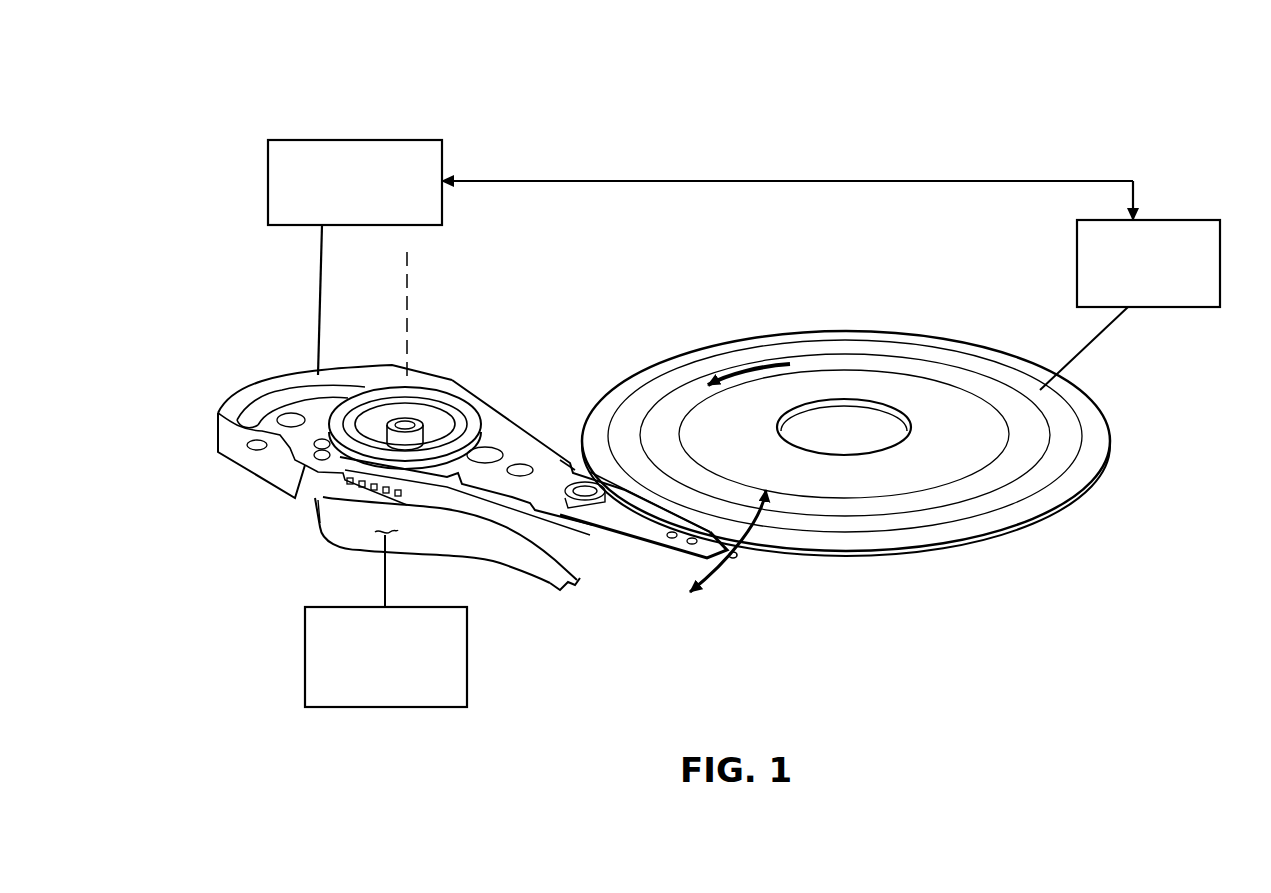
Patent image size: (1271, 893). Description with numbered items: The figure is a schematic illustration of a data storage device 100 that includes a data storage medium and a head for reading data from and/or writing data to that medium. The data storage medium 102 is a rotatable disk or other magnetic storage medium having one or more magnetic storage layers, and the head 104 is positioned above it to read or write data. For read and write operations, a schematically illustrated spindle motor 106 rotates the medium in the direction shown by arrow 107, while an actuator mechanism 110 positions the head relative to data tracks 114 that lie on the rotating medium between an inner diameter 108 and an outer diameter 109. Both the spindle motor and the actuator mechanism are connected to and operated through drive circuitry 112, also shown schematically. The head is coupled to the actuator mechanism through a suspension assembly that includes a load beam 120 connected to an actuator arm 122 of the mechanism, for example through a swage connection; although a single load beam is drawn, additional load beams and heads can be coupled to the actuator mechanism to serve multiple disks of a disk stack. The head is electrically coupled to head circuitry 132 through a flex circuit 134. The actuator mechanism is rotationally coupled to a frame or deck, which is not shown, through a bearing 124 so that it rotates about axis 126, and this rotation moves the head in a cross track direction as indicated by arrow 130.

The data storage device 100 is at (1022, 130).
The data storage medium 102 is at (974, 336).
The head 104 is at (737, 556).
The spindle motor 106 is at (1184, 220).
The arrow 107 is at (752, 368).
The inner diameter 108 is at (883, 400).
The outer diameter 109 is at (852, 331).
The actuator mechanism 110 is at (432, 362).
The drive circuitry 112 is at (442, 150).
The data tracks 114 is at (990, 462).
The load beam 120 is at (620, 512).
The actuator arm 122 is at (534, 442).
The bearing 124 is at (403, 420).
The axis 126 is at (407, 330).
The arrow 130 is at (753, 527).
The head circuitry 132 is at (467, 653).
The flex circuit 134 is at (457, 543).